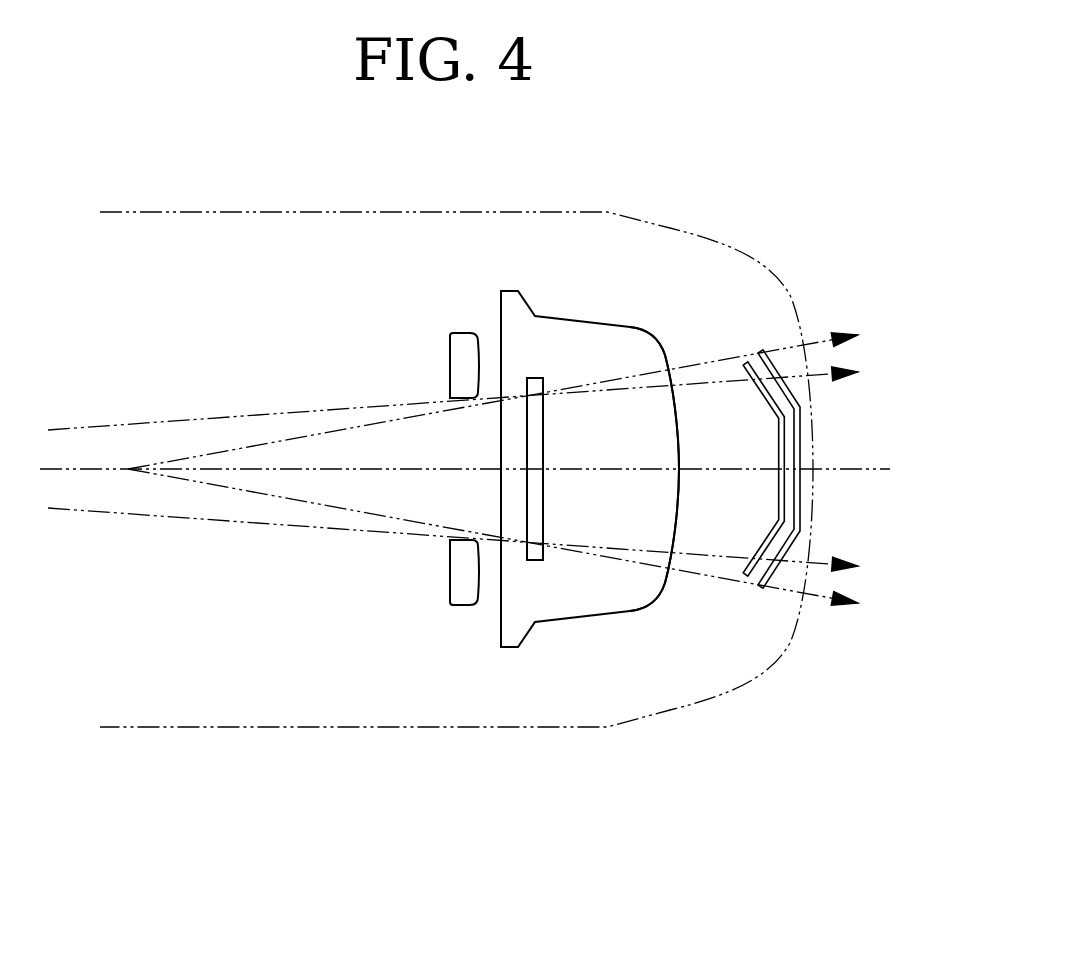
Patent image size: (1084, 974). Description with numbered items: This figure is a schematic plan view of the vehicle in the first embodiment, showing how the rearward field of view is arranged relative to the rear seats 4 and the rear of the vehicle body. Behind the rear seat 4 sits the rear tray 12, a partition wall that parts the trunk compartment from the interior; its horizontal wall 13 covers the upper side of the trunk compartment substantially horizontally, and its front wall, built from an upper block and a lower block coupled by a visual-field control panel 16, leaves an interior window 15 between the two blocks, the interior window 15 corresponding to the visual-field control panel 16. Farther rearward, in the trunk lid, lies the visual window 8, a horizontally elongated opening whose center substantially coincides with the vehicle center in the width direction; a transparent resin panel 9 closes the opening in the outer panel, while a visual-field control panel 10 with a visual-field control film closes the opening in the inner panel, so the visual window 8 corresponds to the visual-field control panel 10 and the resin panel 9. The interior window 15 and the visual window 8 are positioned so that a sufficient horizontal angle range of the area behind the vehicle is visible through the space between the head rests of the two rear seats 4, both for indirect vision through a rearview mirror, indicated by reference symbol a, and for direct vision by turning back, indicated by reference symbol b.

The rear seat 4 is at (460, 362).
The rear tray 12 is at (659, 398).
The horizontal wall 13 is at (632, 345).
The visual-field control panel 16 is at (545, 517).
The interior window 15 is at (622, 589).
The transparent resin panel 9 is at (802, 520).
The visual-field control panel 10 is at (787, 487).
The visual window 8 is at (858, 469).
The indirect vision through a rearview mirror a is at (122, 513).
The direct vision by turning back b is at (222, 488).